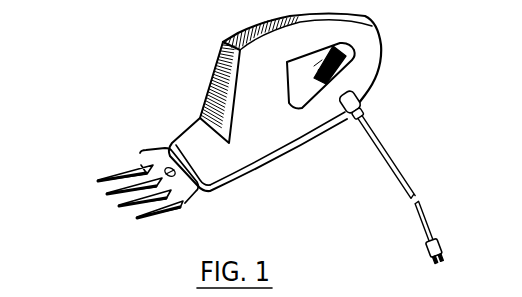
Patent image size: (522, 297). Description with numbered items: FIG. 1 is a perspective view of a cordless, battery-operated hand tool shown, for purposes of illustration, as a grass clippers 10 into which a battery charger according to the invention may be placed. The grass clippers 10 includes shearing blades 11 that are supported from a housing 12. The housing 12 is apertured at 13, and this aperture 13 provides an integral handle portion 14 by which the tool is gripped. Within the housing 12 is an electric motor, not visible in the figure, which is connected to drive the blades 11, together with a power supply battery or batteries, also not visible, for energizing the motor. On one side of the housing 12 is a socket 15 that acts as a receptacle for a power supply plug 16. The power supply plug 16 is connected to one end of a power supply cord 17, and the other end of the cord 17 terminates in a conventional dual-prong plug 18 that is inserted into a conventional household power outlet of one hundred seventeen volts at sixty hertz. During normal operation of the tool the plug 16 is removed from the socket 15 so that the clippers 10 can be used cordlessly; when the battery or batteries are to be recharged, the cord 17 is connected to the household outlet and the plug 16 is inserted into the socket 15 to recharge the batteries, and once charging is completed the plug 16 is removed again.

The grass clippers 10 is at (307, 152).
The shearing blades 11 is at (147, 165).
The housing 12 is at (227, 92).
The aperture 13 is at (287, 78).
The handle portion 14 is at (303, 43).
The socket 15 is at (345, 113).
The power supply plug 16 is at (366, 100).
The power supply cord 17 is at (400, 165).
The dual-prong plug 18 is at (438, 250).